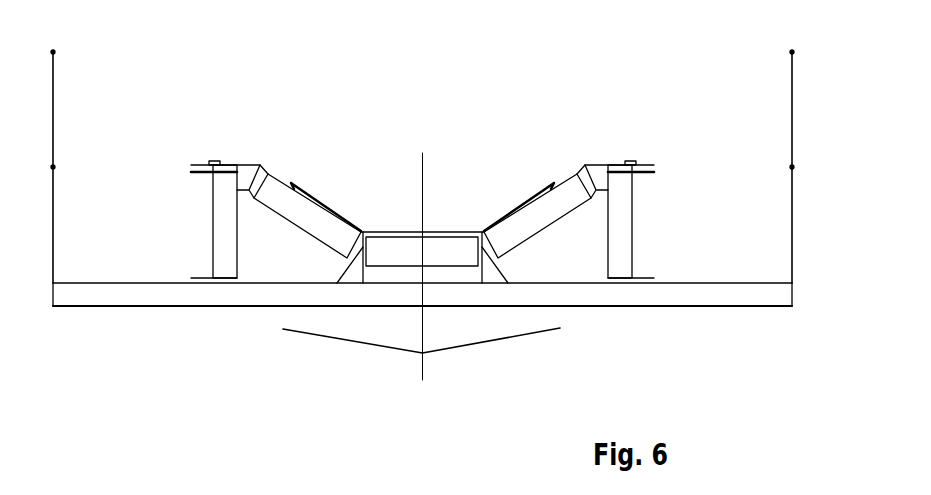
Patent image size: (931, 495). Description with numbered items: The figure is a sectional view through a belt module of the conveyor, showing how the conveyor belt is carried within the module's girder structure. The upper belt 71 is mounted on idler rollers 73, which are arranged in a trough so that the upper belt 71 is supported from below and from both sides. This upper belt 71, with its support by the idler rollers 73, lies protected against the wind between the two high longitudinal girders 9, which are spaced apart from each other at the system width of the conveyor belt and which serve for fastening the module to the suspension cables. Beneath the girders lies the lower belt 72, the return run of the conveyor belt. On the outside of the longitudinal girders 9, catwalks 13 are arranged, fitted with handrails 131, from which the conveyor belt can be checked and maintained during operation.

The longitudinal girder 9 is at (213, 200).
The catwalk 13 is at (723, 275).
The handrail 131 is at (792, 79).
The upper belt 71 is at (522, 195).
The lower belt 72 is at (503, 340).
The idler roller 73 is at (500, 233).